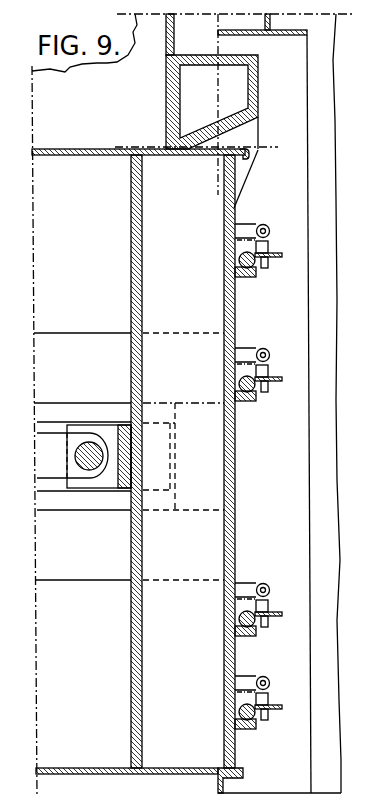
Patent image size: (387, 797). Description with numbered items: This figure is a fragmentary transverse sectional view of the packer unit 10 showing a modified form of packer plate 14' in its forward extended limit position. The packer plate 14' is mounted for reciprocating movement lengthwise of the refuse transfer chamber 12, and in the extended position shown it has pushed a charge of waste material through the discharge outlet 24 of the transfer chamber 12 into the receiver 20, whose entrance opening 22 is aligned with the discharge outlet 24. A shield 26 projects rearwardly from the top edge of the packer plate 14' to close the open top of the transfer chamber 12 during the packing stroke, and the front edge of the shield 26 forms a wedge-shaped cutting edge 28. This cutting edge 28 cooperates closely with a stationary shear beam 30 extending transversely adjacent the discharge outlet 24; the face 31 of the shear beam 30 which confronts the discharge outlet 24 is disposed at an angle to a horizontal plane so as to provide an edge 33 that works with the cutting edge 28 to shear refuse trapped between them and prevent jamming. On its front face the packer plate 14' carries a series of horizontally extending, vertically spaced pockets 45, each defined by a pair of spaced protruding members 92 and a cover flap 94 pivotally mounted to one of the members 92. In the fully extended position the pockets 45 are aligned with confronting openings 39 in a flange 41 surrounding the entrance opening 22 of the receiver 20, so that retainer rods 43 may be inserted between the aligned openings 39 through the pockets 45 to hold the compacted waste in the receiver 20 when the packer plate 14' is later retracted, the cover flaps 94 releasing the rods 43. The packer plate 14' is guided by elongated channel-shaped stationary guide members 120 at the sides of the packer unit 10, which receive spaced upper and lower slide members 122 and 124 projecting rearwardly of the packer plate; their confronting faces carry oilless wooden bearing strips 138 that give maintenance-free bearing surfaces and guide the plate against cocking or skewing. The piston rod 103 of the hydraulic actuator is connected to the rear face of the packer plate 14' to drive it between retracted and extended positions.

The packer unit 10 is at (81, 145).
The refuse transfer chamber 12 is at (115, 170).
The packer plate 14' is at (278, 459).
The receiver 20 is at (341, 70).
The entrance opening 22 is at (218, 40).
The discharge outlet 24 is at (186, 151).
The shield 26 is at (67, 130).
The cutting edge 28 is at (248, 156).
The shear beam 30 is at (261, 98).
The face 31 is at (240, 128).
The edge 33 is at (191, 150).
The openings 39 is at (266, 248).
The flange 41 is at (308, 312).
The retainer rods 43 is at (238, 260).
The pockets 45 is at (258, 268).
The protruding members 92 is at (246, 226).
The cover flap 94 is at (272, 256).
The piston rod 103 is at (52, 443).
The guide members 120 is at (53, 488).
The upper slide member 122 is at (92, 343).
The lower slide member 124 is at (93, 574).
The bearing strips 138 is at (97, 410).